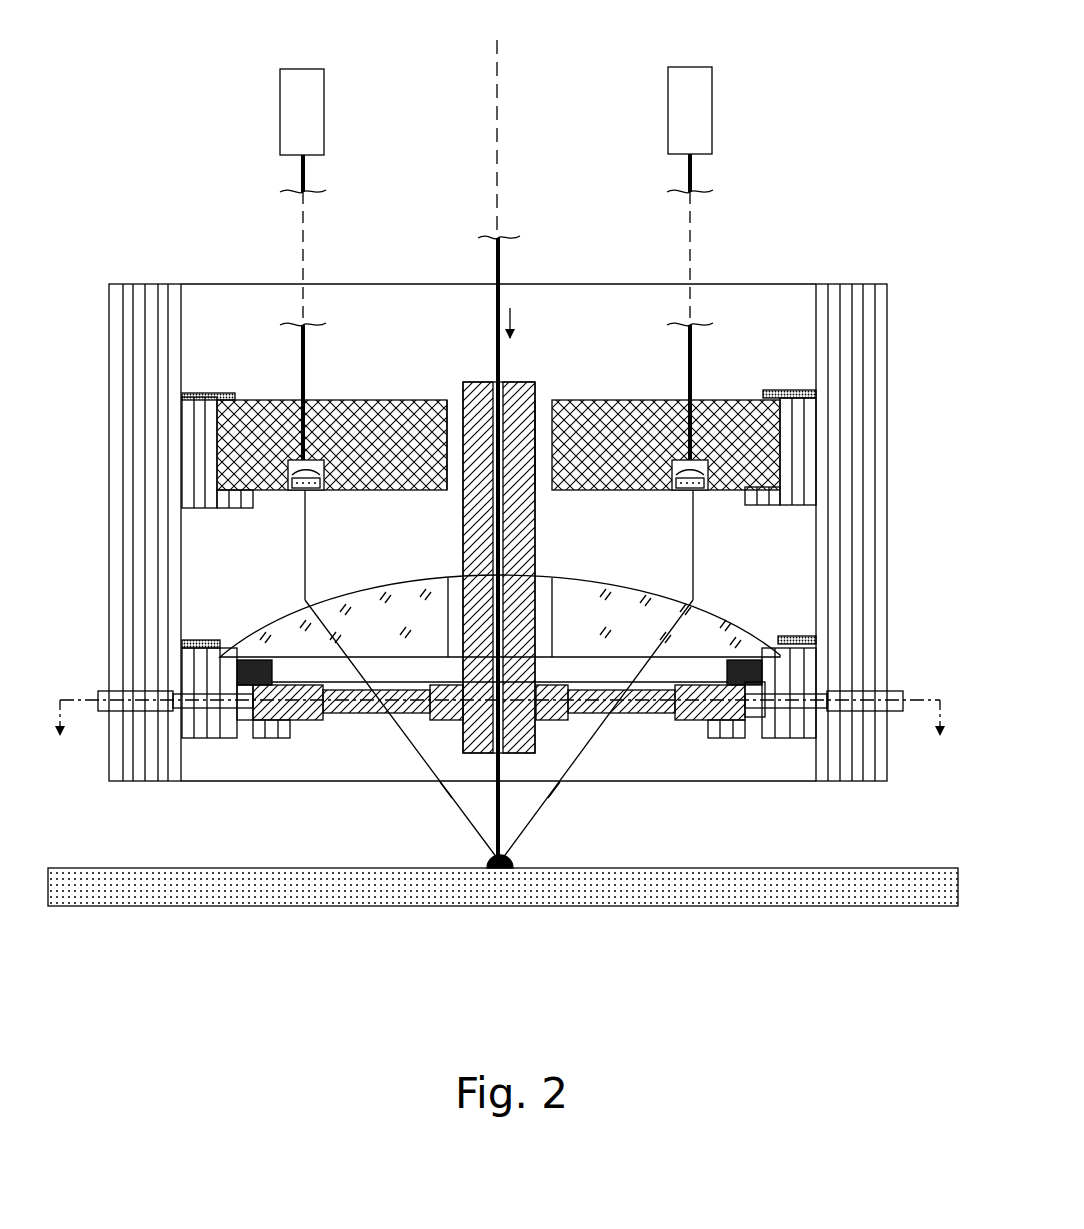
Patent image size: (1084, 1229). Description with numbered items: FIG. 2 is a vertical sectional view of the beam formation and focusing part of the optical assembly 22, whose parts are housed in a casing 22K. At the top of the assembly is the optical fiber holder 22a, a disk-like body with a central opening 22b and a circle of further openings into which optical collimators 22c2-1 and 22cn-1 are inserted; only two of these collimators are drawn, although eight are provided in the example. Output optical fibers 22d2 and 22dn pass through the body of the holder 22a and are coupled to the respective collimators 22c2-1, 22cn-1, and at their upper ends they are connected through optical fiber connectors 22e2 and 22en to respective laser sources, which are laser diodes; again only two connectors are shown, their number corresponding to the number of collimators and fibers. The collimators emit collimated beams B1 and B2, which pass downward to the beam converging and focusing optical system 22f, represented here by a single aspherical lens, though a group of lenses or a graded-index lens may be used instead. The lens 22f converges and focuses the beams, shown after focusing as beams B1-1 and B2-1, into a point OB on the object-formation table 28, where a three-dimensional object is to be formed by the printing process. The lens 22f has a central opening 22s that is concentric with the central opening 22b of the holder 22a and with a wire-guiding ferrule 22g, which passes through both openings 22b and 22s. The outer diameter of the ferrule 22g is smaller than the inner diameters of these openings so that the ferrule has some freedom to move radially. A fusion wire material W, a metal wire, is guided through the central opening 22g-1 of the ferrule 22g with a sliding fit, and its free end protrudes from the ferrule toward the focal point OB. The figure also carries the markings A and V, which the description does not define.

The optical assembly 22 is at (828, 142).
The optical fiber holder 22a is at (795, 437).
The central opening 22b is at (548, 422).
The optical collimator 22c2-1 is at (290, 462).
The optical collimator 22cn-1 is at (706, 462).
The output optical fiber 22d2 is at (303, 355).
The output optical fiber 22dn is at (693, 360).
The optical fiber connector 22e2 is at (304, 102).
The optical fiber connector 22en is at (692, 102).
The beam converging and focusing optical system 22f is at (728, 622).
The wire guiding ferrule 22g is at (465, 382).
The central opening of the ferrule 22g-1 is at (537, 390).
The casing 22K is at (109, 465).
The central opening of the lens 22s is at (457, 630).
The object-formation table 28 is at (728, 930).
The feed direction A is at (522, 331).
The beam B1 is at (305, 542).
The beam B2 is at (693, 523).
The collimated and focused beam B1-1 is at (470, 823).
The collimated and focused beam B2-1 is at (528, 820).
The focal point OB is at (505, 872).
The fusion wire material W is at (502, 268).
The section line V is at (499, 743).